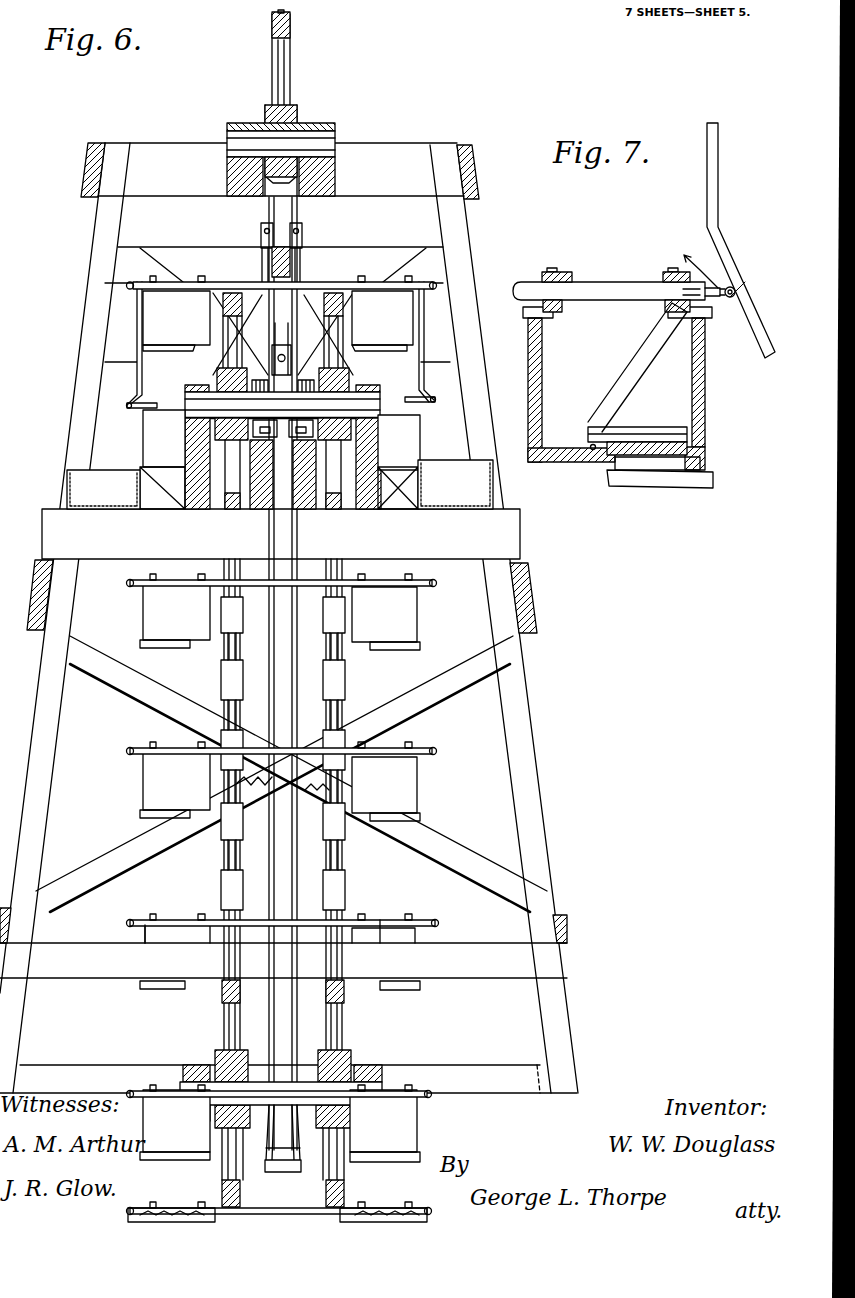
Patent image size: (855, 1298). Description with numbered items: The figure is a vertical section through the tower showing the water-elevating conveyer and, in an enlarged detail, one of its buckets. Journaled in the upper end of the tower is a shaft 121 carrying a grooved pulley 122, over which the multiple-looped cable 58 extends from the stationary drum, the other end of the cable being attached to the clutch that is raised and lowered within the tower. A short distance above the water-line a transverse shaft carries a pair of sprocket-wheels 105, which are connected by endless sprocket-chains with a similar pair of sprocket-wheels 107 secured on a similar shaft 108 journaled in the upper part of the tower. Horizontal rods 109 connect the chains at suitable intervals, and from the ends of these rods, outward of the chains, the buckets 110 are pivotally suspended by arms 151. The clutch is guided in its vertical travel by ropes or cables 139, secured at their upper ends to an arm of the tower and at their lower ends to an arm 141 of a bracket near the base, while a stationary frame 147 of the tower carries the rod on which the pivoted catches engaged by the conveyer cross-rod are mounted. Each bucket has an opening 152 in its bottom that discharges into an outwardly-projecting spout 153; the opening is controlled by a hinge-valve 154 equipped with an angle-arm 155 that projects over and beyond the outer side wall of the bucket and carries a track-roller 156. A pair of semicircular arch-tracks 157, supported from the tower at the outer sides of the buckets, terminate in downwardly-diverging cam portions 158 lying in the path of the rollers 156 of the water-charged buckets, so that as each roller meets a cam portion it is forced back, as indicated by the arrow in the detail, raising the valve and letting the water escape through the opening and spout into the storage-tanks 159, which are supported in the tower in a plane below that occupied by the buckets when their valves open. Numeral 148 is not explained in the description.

In FIG. 6, the multiple-looped cable 58 is at (270, 12).
In FIG. 6, the sprocket-wheels 105 is at (222, 1170).
In FIG. 6, the sprocket-wheels 107 is at (222, 355).
In FIG. 6, the shaft 108 is at (188, 397).
In FIG. 6, the horizontal rods 109 is at (190, 283).
In FIG. 6, the buckets 110 is at (420, 1127).
In FIG. 7, the buckets 110 is at (617, 385).
In FIG. 6, the shaft 121 is at (227, 135).
In FIG. 6, the grooved pulley 122 is at (292, 33).
In FIG. 6, the ropes or cables 139 is at (293, 650).
In FIG. 6, the arm 141 is at (278, 1172).
In FIG. 6, the stationary frame 147 is at (268, 440).
In FIG. 6, the right column 148 is at (306, 440).
In FIG. 6, the arms 151 is at (405, 738).
In FIG. 7, the arms 151 is at (550, 280).
In FIG. 7, the openings 152 is at (613, 468).
In FIG. 6, the spouts 153 is at (388, 480).
In FIG. 7, the spouts 153 is at (685, 490).
In FIG. 7, the hinge-valves 154 is at (632, 445).
In FIG. 7, the angle-arms 155 is at (650, 336).
In FIG. 6, the track-rollers 156 is at (432, 402).
In FIG. 7, the track-rollers 156 is at (727, 312).
In FIG. 6, the semicircular arch-tracks 157 is at (108, 330).
In FIG. 7, the semicircular arch-tracks 157 is at (720, 155).
In FIG. 6, the cam portions 158 is at (135, 395).
In FIG. 7, the cam portions 158 is at (737, 294).
In FIG. 6, the storage-tanks 159 is at (80, 487).